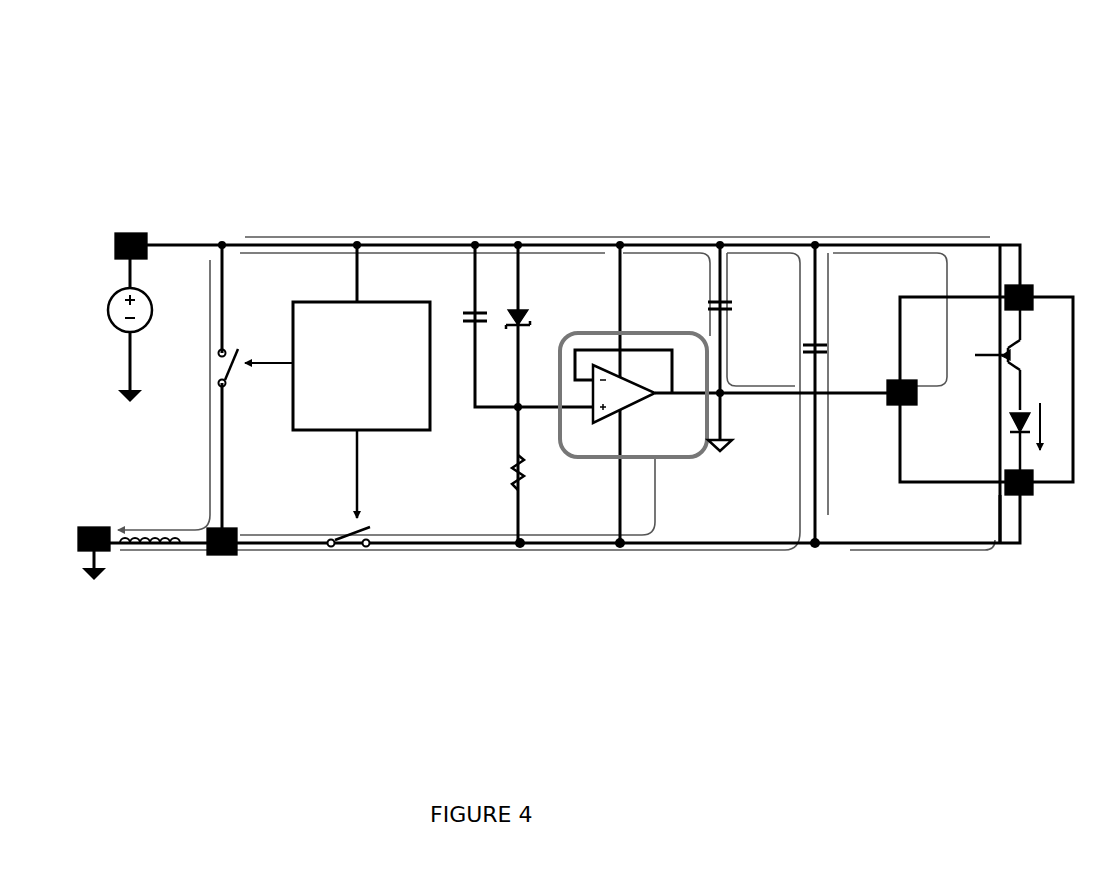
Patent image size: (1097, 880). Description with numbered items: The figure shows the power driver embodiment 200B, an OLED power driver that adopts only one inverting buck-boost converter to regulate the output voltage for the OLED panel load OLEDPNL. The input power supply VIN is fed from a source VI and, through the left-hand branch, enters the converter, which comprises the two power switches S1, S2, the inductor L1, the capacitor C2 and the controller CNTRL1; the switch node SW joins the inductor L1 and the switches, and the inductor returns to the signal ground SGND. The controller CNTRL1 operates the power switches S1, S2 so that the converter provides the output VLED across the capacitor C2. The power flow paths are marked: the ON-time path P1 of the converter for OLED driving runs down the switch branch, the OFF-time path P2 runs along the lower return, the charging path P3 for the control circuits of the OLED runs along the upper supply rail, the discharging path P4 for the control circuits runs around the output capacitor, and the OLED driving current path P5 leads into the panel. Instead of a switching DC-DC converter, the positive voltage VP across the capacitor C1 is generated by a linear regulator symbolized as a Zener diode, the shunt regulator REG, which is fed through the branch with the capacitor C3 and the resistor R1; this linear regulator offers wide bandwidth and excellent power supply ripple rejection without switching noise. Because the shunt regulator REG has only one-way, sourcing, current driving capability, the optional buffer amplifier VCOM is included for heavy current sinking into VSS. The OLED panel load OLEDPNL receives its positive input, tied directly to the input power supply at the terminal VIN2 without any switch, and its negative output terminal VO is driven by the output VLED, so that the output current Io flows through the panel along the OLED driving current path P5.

The power driver embodiment 200B is at (824, 163).
The input power supply VIN is at (106, 246).
The input voltage source VI is at (116, 310).
The power switch S1 is at (235, 368).
The power switch S2 is at (349, 549).
The switch node pad SW is at (220, 555).
The inductor L1 is at (150, 558).
The signal ground pad SGND is at (90, 528).
The controller CNTRL1 is at (361, 410).
The capacitor C1 is at (705, 307).
The capacitor C2 is at (799, 351).
The third capacitor C3 is at (463, 325).
The resistor R1 is at (497, 472).
The shunt regulator REG is at (539, 319).
The buffer amplifier VCOM is at (633, 395).
The element VSS is at (735, 436).
The positive voltage VP is at (747, 301).
The output VLED is at (854, 349).
The ON-time path P1 is at (207, 447).
The OFF-time path P2 is at (543, 553).
The charging path P3 is at (600, 255).
The discharging path P4 is at (896, 260).
The OLED driving current path P5 is at (905, 557).
The OLED panel load OLEDPNL is at (980, 390).
The input power supply VIN2 is at (1051, 278).
The output voltage terminal VO is at (1049, 513).
The output current Io is at (1052, 430).